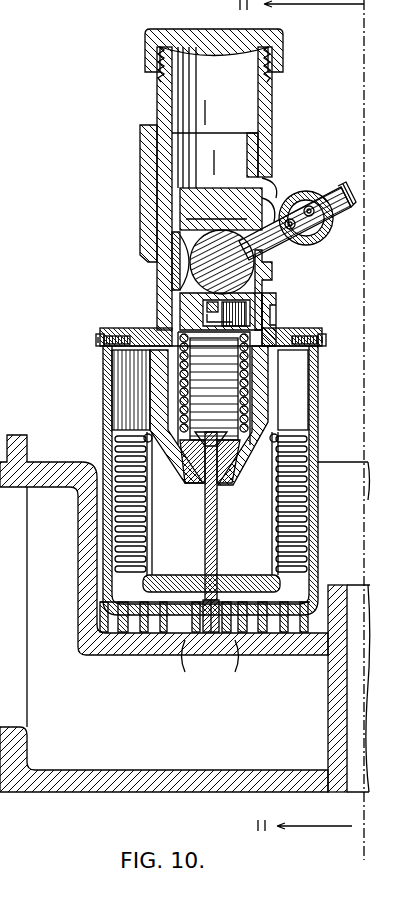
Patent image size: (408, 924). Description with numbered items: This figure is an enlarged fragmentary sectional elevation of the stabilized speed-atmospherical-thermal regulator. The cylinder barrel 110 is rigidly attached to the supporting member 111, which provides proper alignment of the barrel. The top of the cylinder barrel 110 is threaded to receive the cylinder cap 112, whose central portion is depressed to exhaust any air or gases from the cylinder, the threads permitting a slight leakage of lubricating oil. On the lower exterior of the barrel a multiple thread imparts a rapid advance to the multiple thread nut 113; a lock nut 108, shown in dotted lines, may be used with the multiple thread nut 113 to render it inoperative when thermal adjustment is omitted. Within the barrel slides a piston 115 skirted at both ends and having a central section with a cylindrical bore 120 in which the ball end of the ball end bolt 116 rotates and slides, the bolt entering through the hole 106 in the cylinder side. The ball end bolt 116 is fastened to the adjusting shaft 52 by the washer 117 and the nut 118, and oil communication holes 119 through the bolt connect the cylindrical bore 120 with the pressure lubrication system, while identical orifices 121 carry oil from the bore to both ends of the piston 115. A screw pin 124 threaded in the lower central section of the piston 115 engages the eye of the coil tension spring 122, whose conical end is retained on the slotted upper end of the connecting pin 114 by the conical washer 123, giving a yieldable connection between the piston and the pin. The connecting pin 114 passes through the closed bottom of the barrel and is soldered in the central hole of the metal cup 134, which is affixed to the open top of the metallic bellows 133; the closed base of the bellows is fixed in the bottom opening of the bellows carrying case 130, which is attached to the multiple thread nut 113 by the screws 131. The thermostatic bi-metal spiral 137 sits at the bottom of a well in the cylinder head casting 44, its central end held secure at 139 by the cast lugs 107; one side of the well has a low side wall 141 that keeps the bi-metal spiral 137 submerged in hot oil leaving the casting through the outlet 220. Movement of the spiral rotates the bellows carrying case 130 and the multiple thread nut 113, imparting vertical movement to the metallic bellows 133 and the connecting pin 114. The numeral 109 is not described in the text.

The cylinder cap 112 is at (146, 44).
The cylinder barrel 110 is at (157, 91).
The supporting member 111 is at (140, 143).
The orifices 121 is at (183, 200).
The piston 115 is at (186, 219).
The cylindrical bore 120 is at (176, 284).
The nut 118 is at (316, 213).
The oil communication holes 119 is at (300, 188).
The ball end bolt 116 is at (343, 196).
The washer 117 is at (330, 226).
The hole 106 is at (272, 180).
The adjusting shaft 52 is at (274, 200).
The screw pin 124 is at (268, 300).
The lock nut 108 is at (266, 305).
The multiple thread nut 113 is at (276, 336).
The mounting plate 109 is at (156, 338).
The screws 131 is at (100, 336).
The bellows carrying case 130 is at (106, 402).
The metallic bellows 133 is at (308, 514).
The metal cup 134 is at (264, 442).
The coil tension spring 122 is at (248, 416).
The conical washer 123 is at (228, 478).
The connecting pin 114 is at (214, 520).
The thermostatic bi-metal spiral 137 is at (136, 633).
The central end attachment 139 is at (196, 633).
The cast lugs 107 is at (210, 663).
The cylinder head casting 44 is at (345, 718).
The outlet 220 is at (8, 715).
The low side wall 141 is at (346, 597).